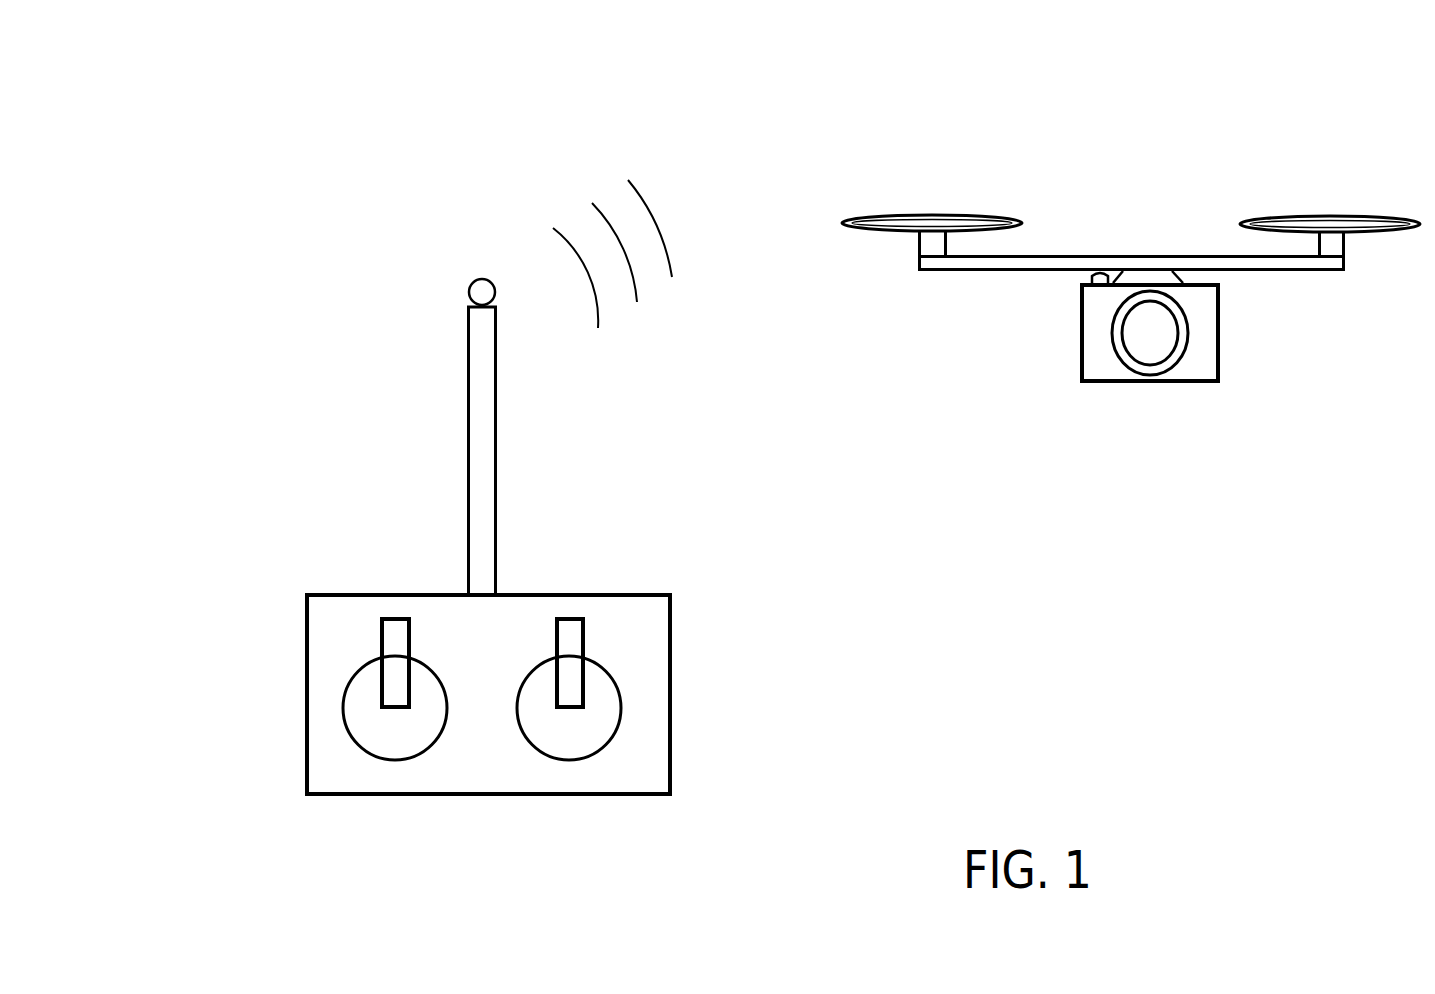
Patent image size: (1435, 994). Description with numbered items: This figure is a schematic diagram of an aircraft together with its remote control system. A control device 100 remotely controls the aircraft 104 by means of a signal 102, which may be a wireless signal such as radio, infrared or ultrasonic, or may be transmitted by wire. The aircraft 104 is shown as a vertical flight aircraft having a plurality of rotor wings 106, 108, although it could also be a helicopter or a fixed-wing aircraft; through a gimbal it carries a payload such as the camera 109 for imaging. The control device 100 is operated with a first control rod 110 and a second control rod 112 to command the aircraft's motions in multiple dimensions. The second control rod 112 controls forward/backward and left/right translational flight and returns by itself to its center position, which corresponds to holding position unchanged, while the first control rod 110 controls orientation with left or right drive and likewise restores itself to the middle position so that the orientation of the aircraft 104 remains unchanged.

The control device 100 is at (247, 511).
The signal 102 is at (532, 187).
The aircraft 104 is at (1057, 124).
The rotor wing 106 is at (860, 228).
The rotor wing 108 is at (1357, 232).
The camera 109 is at (1080, 357).
The first control rod 110 is at (380, 630).
The second control rod 112 is at (570, 618).